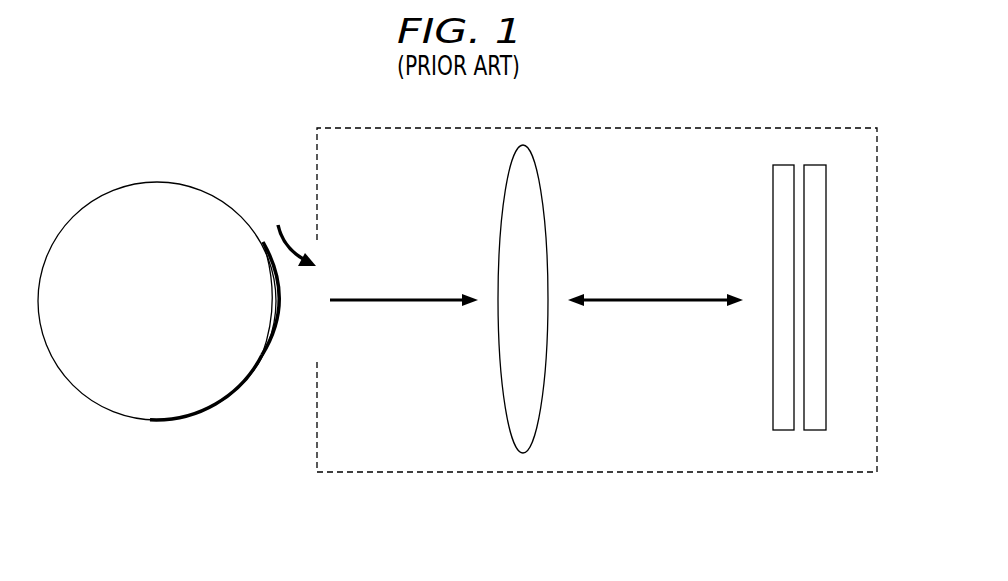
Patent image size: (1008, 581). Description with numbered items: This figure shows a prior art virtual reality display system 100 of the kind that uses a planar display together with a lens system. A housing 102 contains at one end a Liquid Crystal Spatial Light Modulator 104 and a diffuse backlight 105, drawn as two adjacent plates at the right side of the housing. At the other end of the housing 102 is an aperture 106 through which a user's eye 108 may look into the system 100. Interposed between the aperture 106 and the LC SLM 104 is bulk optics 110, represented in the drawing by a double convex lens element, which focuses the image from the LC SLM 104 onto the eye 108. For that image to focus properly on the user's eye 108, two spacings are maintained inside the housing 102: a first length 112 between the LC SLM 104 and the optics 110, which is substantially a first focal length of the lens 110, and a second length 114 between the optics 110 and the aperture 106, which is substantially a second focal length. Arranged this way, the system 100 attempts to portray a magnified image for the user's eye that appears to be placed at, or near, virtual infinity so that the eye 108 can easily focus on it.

The system 100 is at (818, 93).
The housing 102 is at (353, 472).
The Liquid Crystal Spatial Light Modulator 104 is at (773, 402).
The diffuse backlight 105 is at (826, 410).
The aperture 106 is at (289, 230).
The user's eye 108 is at (117, 202).
The bulk optics 110 is at (522, 453).
The first length 112 is at (656, 300).
The second length 114 is at (378, 300).